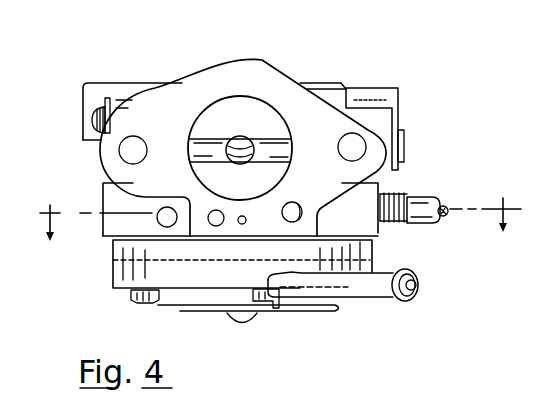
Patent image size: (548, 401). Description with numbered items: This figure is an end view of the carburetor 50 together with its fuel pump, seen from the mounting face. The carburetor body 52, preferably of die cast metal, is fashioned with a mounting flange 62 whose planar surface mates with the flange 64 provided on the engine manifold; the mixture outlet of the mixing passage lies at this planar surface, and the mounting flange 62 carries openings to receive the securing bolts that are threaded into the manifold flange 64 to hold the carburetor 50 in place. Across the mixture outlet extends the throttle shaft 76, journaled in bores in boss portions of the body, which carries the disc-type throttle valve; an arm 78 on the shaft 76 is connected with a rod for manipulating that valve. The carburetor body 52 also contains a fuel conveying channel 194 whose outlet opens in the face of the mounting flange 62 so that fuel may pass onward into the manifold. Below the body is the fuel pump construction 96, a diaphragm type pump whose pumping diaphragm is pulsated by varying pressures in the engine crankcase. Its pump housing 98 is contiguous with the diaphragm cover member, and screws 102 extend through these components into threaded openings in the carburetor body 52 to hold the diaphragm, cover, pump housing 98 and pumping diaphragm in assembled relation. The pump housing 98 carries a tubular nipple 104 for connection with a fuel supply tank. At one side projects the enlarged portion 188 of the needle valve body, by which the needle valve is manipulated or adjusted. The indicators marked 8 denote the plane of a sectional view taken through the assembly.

The carburetor 50 is at (282, 55).
The body member 52 is at (313, 81).
The mounting flange 62 is at (258, 67).
The manifold flange 64 is at (122, 162).
The throttle shaft 76 is at (213, 140).
The arm 78 is at (398, 89).
The fuel pump construction 96 is at (114, 295).
The pump housing 98 is at (115, 272).
The screws 102 is at (147, 303).
The tubular nipple 104 is at (389, 271).
The enlarged portion 188 is at (424, 197).
The fuel conveying channel 194 is at (248, 217).
The section line 8- 8 is at (280, 235).